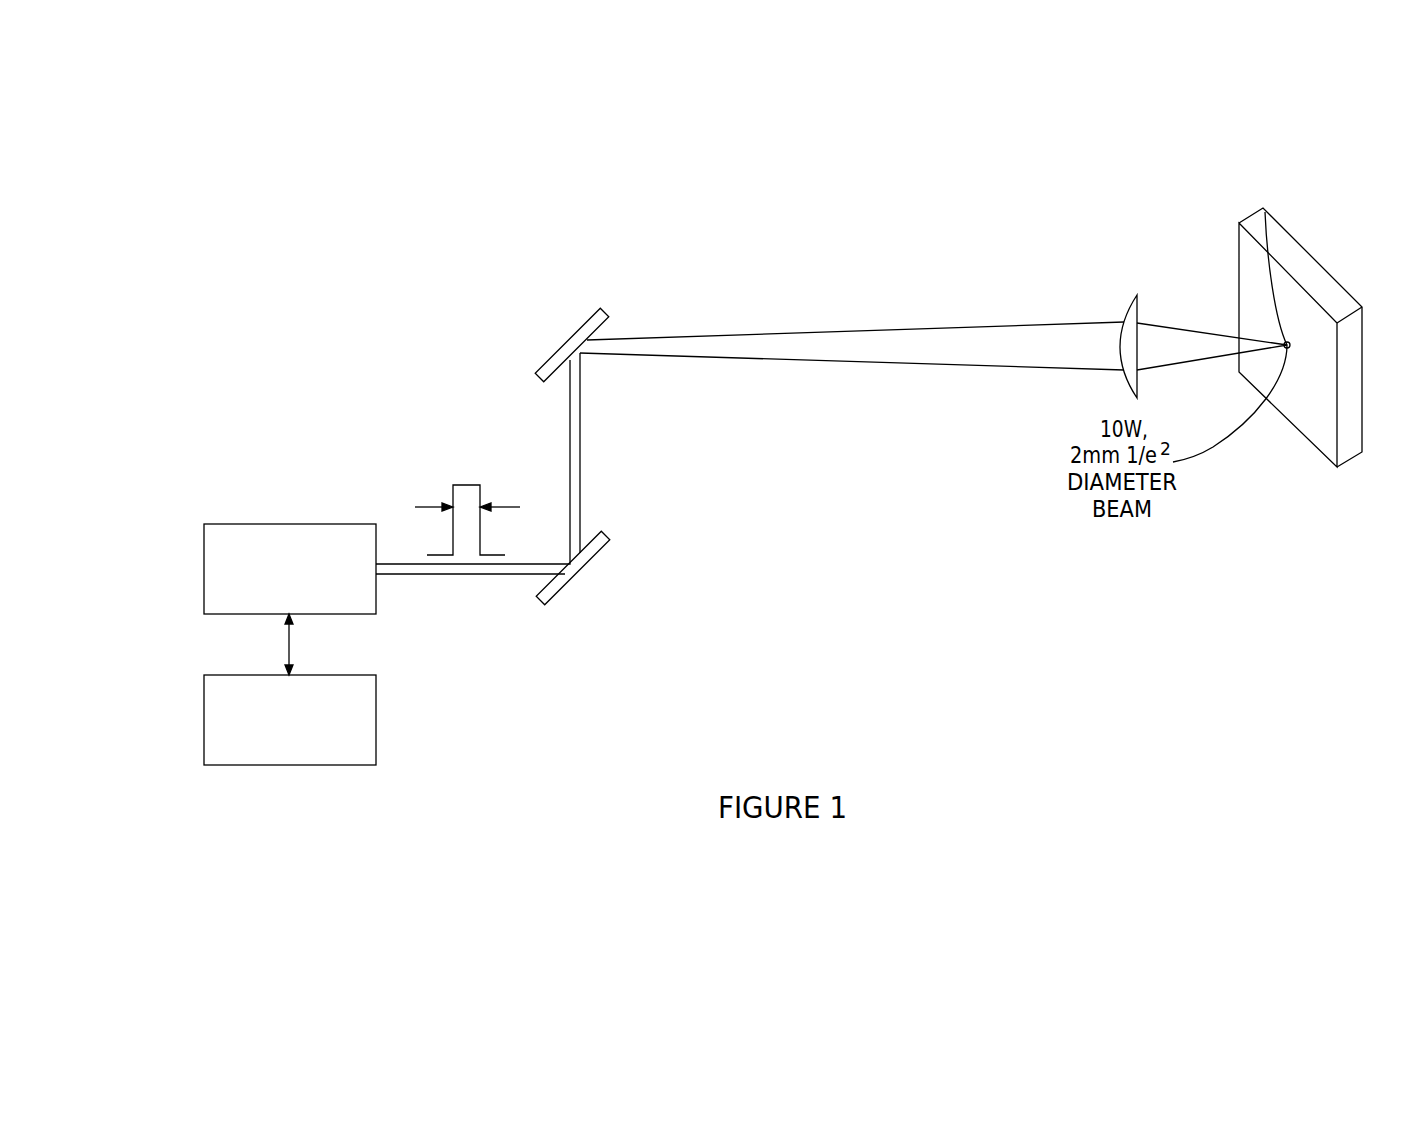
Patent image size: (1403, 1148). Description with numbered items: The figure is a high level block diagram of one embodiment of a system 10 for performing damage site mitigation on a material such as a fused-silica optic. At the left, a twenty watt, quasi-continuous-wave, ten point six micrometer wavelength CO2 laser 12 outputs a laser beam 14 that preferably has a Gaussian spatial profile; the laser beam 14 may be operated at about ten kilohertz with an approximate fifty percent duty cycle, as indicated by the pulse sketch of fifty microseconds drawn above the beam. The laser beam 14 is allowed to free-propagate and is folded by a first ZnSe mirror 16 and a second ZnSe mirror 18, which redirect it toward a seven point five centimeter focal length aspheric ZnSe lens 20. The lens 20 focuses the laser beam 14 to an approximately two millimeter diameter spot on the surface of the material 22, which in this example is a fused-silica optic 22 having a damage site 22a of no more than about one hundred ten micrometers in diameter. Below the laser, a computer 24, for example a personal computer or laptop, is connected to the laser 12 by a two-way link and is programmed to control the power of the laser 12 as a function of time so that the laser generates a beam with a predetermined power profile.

The system 10 is at (336, 318).
The CO2 laser 12 is at (377, 592).
The laser beam 14 is at (467, 575).
The ZnSe mirror 16 is at (553, 608).
The ZnSe mirror 18 is at (592, 315).
The aspheric ZnSe lens 20 is at (1127, 387).
The fused-silica optic 22 is at (1297, 260).
The damage site 22a is at (1264, 213).
The computer 24 is at (377, 722).